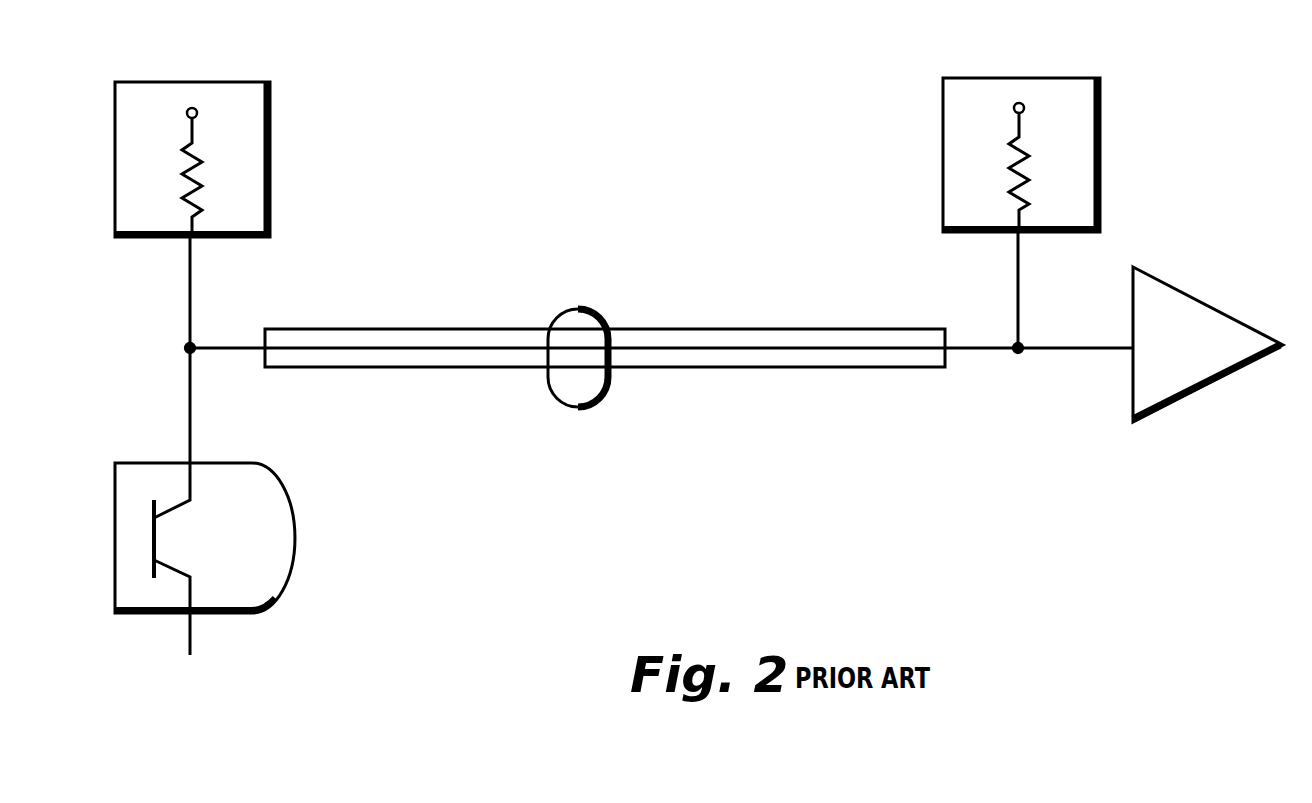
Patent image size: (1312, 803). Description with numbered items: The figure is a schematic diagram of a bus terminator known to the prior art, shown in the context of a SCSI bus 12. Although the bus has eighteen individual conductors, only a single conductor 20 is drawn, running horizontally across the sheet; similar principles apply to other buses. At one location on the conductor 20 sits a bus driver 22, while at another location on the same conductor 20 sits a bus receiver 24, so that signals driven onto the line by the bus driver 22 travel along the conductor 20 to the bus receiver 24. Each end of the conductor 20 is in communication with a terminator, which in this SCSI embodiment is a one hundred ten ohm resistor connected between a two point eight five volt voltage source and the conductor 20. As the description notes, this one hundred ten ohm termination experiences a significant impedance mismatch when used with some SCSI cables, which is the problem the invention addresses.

The bus 12 is at (588, 402).
The conductor 20 is at (772, 350).
The bus driver 22 is at (280, 588).
The bus receiver 24 is at (1190, 293).